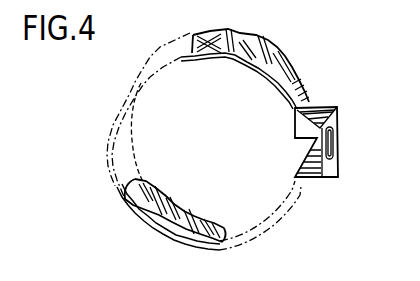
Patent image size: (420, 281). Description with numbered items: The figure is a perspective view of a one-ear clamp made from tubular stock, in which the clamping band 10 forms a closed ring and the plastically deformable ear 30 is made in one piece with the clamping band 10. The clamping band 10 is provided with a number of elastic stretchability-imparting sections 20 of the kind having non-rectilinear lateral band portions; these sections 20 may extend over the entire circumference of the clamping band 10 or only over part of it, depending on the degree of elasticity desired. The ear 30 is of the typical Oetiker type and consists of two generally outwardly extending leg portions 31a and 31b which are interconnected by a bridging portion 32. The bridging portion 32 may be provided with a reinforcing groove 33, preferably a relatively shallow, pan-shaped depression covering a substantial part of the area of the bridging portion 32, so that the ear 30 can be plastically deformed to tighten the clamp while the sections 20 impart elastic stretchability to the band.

The clamping band 10 is at (110, 183).
The elastic stretchability-imparting sections 20 is at (281, 47).
The plastically deformable ear 30 is at (339, 107).
The leg portion 31a is at (319, 107).
The leg portion 31b is at (297, 186).
The bridging portion 32 is at (331, 170).
The reinforcing groove 33 is at (333, 139).